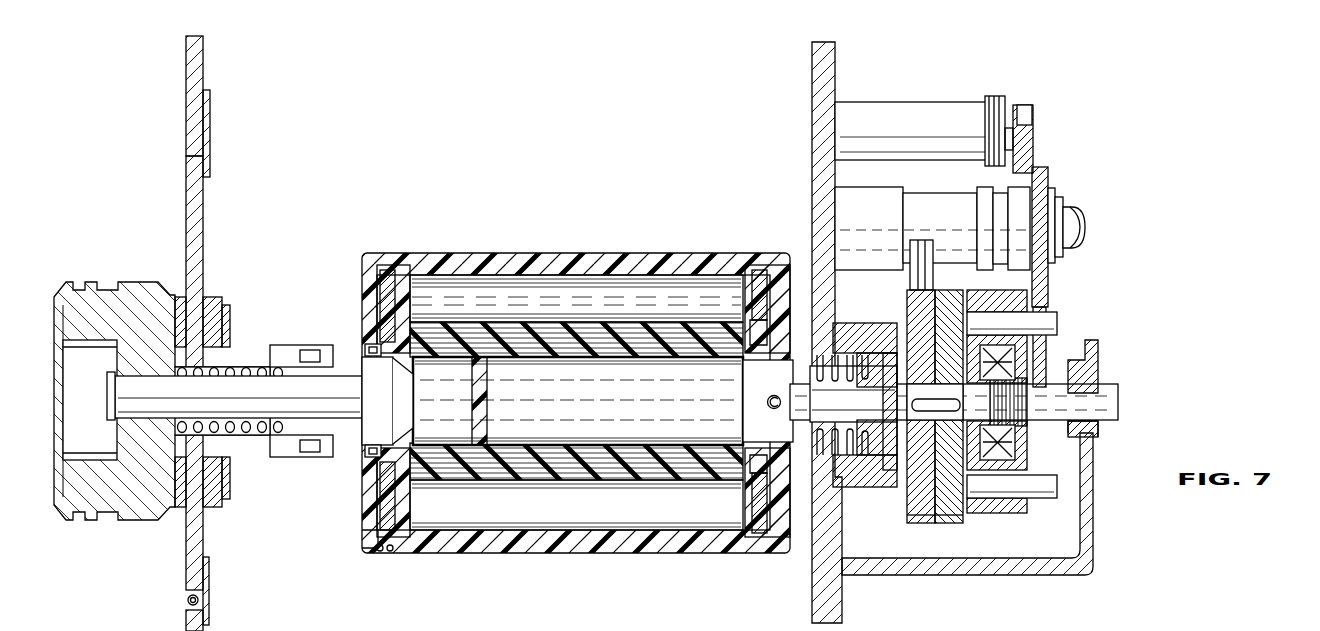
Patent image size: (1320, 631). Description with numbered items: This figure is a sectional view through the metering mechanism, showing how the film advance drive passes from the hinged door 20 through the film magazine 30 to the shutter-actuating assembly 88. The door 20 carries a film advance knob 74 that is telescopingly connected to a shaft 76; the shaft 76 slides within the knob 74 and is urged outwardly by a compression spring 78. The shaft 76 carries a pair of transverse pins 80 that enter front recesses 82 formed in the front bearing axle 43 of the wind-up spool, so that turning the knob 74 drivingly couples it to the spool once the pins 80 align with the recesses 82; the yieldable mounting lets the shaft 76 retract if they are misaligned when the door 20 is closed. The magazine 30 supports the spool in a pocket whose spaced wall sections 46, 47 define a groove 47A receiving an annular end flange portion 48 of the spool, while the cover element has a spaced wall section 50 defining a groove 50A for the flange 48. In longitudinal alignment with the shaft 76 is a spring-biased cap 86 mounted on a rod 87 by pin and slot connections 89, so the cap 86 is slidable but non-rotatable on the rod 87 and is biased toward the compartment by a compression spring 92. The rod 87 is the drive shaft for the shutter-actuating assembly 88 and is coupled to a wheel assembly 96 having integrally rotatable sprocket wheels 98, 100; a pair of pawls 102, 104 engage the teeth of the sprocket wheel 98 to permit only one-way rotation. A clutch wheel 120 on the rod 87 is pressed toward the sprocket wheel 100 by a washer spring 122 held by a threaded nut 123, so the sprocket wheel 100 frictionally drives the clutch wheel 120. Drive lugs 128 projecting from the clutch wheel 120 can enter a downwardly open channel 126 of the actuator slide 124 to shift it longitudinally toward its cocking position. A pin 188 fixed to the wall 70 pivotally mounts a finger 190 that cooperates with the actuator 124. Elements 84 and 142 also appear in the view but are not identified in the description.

The hinged door 20 is at (186, 222).
The film advance knob 74 is at (158, 282).
The compression spring 78 is at (258, 345).
The shaft 76 is at (258, 405).
The front recesses 82 is at (365, 345).
The transverse pins 80 is at (377, 357).
The front bearing axle 43 is at (362, 465).
The spaced wall section 46 is at (365, 548).
The groove 47A is at (378, 552).
The spaced wall section 47 is at (390, 548).
The annular end flange portion 48 is at (375, 297).
The spaced wall section 50 is at (390, 272).
The film magazine 30 is at (566, 246).
The grooves 50A is at (763, 272).
The bearing retainer 84 is at (758, 330).
The spring-biased cap 86 is at (745, 380).
The pin and slot connections 89 is at (757, 402).
The wall 70 is at (812, 148).
The pin 188 is at (895, 115).
The finger 190 is at (1033, 140).
The actuator slide 124 is at (1050, 176).
The cap nut 142 is at (1085, 237).
The channel 126 is at (1048, 305).
The shutter-actuating assembly 88 is at (1180, 326).
The drive lugs 128 is at (1058, 330).
The washer spring 122 is at (1093, 375).
The threaded nut 123 is at (1022, 447).
The clutch wheel 120 is at (1016, 513).
The sprocket wheel 100 is at (950, 525).
The sprocket wheel 98 is at (935, 525).
The wheel assembly 96 is at (903, 517).
The rod 87 is at (948, 432).
The compression spring 92 is at (868, 482).
The pawl 102 is at (912, 276).
The pawl 104 is at (933, 278).